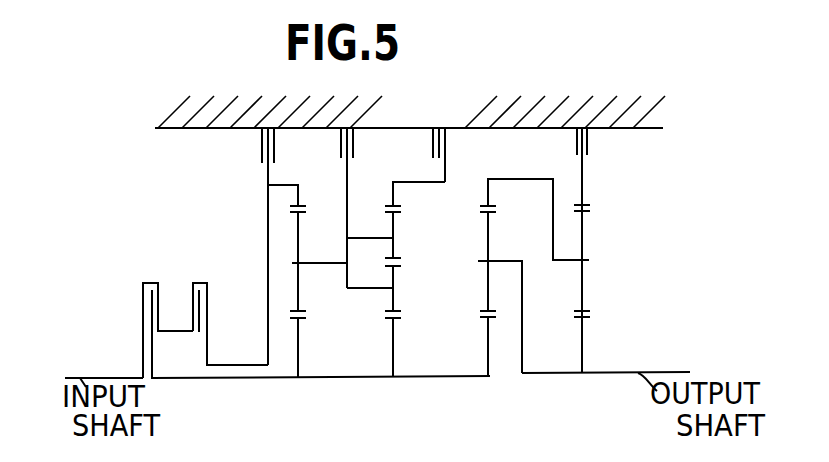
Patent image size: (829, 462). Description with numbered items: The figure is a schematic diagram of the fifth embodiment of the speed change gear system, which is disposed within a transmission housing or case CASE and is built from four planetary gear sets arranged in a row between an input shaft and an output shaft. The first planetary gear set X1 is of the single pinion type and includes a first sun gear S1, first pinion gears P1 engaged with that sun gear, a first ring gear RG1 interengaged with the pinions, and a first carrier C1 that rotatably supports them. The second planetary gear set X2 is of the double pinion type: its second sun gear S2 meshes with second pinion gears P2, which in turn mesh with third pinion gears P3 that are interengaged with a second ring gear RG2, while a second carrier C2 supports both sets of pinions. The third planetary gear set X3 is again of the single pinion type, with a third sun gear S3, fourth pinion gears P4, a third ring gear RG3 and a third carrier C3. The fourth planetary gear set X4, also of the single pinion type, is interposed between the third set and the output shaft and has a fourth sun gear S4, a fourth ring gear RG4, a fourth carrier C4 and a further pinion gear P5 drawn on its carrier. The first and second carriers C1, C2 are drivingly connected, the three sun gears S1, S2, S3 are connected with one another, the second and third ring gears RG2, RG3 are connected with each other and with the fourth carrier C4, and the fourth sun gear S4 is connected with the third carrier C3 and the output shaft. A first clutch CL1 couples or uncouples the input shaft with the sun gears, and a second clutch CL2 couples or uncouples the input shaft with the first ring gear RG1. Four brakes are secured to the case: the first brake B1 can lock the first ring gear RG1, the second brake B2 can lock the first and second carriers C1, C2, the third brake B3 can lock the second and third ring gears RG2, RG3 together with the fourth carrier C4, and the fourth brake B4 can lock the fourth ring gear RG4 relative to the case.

The case CASE is at (410, 111).
The first brake B1 is at (247, 246).
The second brake B2 is at (327, 208).
The third brake B3 is at (421, 155).
The fourth brake B4 is at (560, 250).
The first ring gear RG1 is at (298, 197).
The second ring gear RG2 is at (393, 198).
The third ring gear RG3 is at (488, 194).
The fourth ring gear RG4 is at (582, 190).
The first carrier C1 is at (325, 263).
The second carrier C2 is at (370, 238).
The third carrier C3 is at (498, 262).
The fourth carrier C4 is at (567, 261).
The first pinion gears P1 is at (298, 295).
The second pinion gears P2 is at (393, 300).
The third pinion gears P3 is at (393, 233).
The fourth pinion gears P4 is at (488, 286).
The fifth planet gear P5 is at (582, 290).
The first sun gear S1 is at (300, 338).
The second sun gear S2 is at (395, 338).
The third sun gear S3 is at (490, 338).
The fourth sun gear S4 is at (584, 338).
The first planetary gear set X1 is at (297, 340).
The second planetary gear set X2 is at (392, 340).
The third planetary gear set X3 is at (485, 340).
The fourth planetary gear set X4 is at (578, 340).
The first clutch CL1 is at (159, 315).
The second clutch CL2 is at (227, 309).